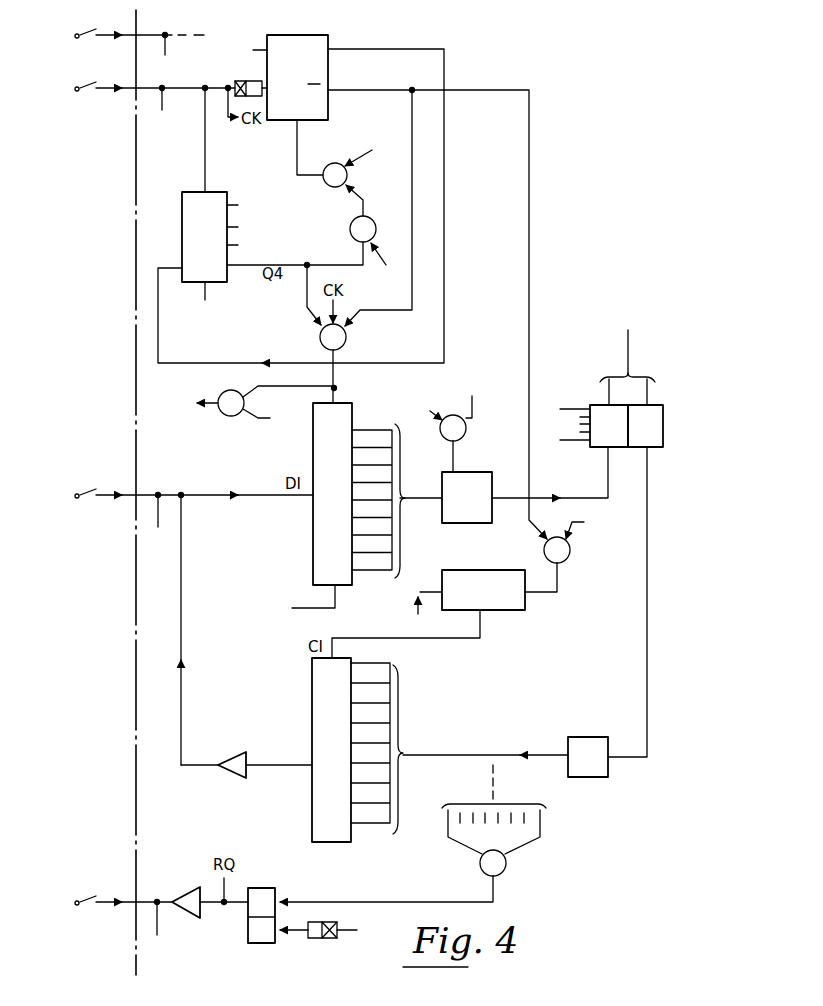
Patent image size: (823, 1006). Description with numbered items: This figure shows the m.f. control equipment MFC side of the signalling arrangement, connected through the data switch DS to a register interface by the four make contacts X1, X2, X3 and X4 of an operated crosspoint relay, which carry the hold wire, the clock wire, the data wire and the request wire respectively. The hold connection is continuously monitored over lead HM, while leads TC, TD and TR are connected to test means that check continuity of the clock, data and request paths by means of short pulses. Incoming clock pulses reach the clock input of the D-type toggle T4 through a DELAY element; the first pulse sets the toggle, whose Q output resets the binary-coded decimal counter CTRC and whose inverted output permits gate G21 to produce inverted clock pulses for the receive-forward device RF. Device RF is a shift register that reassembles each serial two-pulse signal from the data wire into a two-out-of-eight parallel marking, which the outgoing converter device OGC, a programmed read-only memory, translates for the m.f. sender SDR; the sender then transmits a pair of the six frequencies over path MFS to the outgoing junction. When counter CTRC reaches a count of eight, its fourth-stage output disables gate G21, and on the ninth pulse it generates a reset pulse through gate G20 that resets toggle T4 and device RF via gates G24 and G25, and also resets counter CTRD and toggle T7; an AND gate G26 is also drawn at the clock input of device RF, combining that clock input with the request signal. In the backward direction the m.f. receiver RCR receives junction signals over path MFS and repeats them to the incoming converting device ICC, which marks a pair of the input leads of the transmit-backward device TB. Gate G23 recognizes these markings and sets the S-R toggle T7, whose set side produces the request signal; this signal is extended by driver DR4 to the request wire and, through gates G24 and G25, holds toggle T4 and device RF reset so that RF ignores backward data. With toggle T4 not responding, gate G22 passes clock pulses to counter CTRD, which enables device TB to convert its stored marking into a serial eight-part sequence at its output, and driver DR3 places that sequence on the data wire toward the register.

The data switch DS is at (88, 181).
The m.f. control equipment MFC is at (484, 51).
The make contact X1 of crosspoint relay X1 is at (138, 25).
The make contact X2 of crosspoint relay X2 is at (153, 77).
The make contact X3 of crosspoint relay X3 is at (192, 485).
The make contact X4 of crosspoint relay X4 is at (122, 892).
The HM lead HM is at (164, 55).
The TC lead TC is at (161, 111).
The TD lead TD is at (157, 524).
The TR lead TR is at (156, 931).
The delay element DELAY is at (250, 79).
The D-type toggle T4 is at (280, 69).
The S-R toggle T7 is at (314, 918).
The AND gate G20 is at (455, 425).
The OR gate G21 is at (349, 363).
The AND gate G22 is at (566, 553).
The OR gate G23 is at (413, 833).
The OR gate G24 is at (338, 165).
The AND gate G25 is at (351, 233).
The AND gate G26 is at (251, 399).
The binary-coded decimal counter CTRC is at (189, 212).
The counter CTRD is at (428, 603).
The receive-forward device RF is at (335, 510).
The transmit-backward device TB is at (357, 750).
The outgoing converter device OGC is at (504, 485).
The m.f. sender SDR is at (583, 425).
The m.f. receiver RCR is at (635, 581).
The m.f. signalling path MFS is at (627, 358).
The incoming converting device ICC is at (505, 757).
The transistor driver DR3 is at (247, 636).
The transistor driver DR4 is at (204, 893).